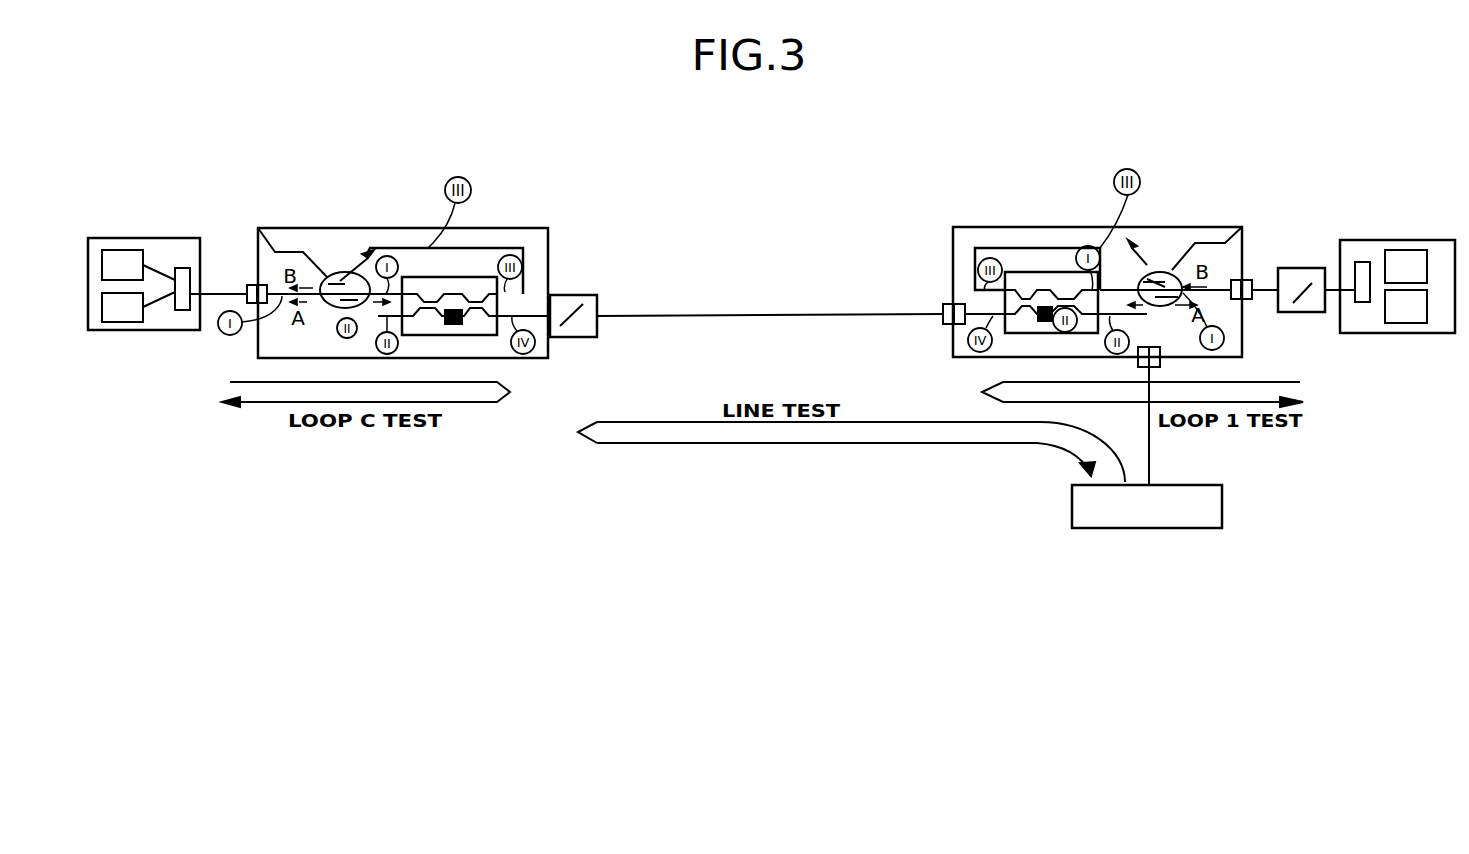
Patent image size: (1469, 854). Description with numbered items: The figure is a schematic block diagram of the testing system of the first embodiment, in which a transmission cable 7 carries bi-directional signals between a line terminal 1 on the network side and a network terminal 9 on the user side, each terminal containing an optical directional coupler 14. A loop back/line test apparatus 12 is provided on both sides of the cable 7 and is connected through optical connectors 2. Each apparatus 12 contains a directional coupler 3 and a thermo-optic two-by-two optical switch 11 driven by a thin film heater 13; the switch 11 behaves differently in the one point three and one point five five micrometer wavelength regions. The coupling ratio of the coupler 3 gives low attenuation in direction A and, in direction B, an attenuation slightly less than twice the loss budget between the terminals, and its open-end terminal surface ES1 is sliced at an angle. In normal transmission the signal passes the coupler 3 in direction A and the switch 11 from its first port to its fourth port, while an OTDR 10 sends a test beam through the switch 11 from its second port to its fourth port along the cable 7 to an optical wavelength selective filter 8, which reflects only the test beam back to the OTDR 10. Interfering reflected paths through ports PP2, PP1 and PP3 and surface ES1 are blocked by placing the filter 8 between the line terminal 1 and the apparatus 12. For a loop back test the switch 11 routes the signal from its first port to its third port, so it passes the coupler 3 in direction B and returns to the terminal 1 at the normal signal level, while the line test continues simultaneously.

The line terminal 1 is at (1390, 240).
The optical connector 2 is at (250, 285).
The directional coupler 3 is at (337, 308).
The transmission cable 7 is at (771, 314).
The optical wavelength selective filter 8 is at (580, 295).
The network terminal 9 is at (147, 237).
The OTDR 10 is at (1222, 505).
The TO-activated 2×2 optical switch 11 is at (480, 336).
The loop back/line test apparatus 12 is at (548, 231).
The thin film heater 13 is at (452, 314).
The optical directional coupler 14 is at (180, 318).
The open-end terminal surface ES1 is at (258, 228).
The port PP1 is at (316, 303).
The port PP2 is at (370, 300).
The port PP3 is at (368, 256).